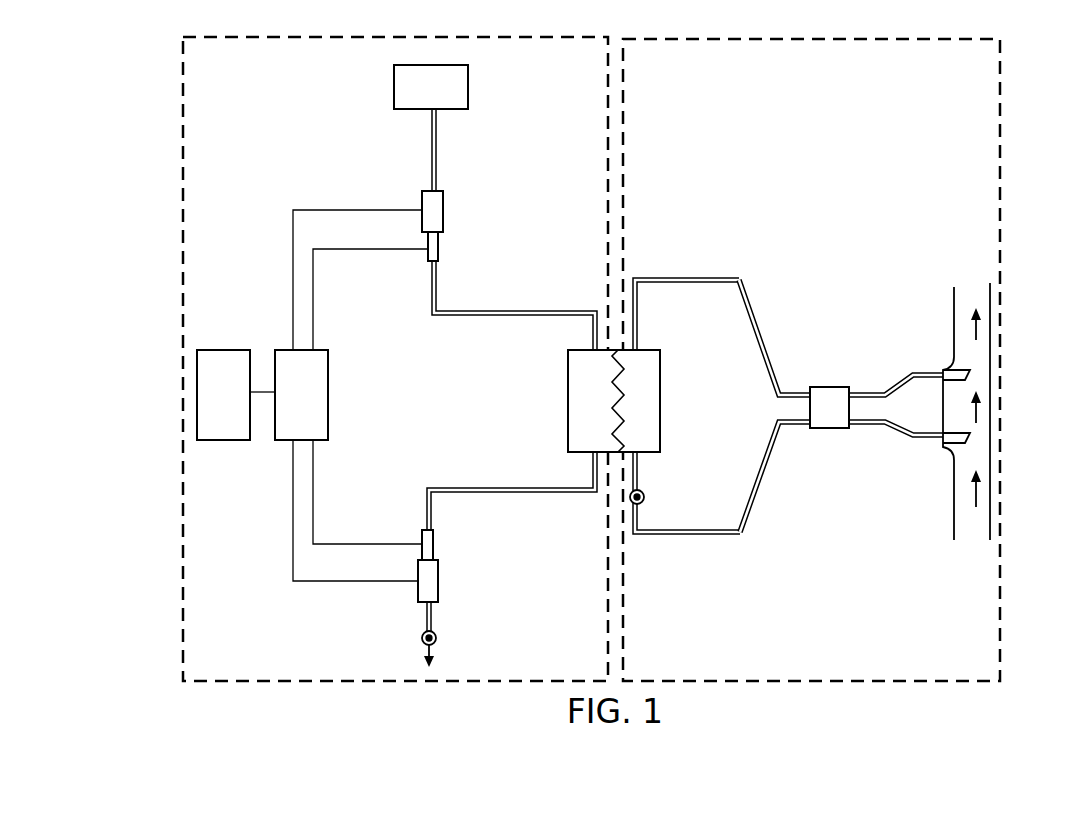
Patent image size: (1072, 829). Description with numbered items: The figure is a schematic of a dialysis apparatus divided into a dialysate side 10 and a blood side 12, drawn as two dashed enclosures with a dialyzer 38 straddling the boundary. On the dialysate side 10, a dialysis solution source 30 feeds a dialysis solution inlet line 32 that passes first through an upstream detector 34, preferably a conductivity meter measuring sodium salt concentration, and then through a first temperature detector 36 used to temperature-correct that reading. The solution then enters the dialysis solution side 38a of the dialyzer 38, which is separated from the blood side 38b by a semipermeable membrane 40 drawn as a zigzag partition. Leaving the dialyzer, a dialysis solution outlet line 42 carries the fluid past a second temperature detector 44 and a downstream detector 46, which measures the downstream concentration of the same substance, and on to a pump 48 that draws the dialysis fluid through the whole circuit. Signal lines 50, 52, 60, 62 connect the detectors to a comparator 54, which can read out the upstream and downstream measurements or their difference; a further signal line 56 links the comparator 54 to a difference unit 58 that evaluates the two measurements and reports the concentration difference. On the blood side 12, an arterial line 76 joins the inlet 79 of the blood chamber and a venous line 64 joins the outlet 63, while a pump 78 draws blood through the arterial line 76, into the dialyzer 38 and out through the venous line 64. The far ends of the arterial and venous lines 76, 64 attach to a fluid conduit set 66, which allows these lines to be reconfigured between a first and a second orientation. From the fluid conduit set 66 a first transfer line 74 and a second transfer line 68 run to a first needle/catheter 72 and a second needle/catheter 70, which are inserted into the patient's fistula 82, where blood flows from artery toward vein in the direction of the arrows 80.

The dialysate side 10 is at (180, 195).
The blood side 12 is at (1004, 126).
The dialysis solution source 30 is at (391, 88).
The dialysis solution inlet line 32 is at (438, 155).
The upstream detector 34 is at (444, 201).
The first temperature detector 36 is at (439, 243).
The dialyzer 38 is at (617, 401).
The dialysis solution side of dialyzer 38a is at (580, 368).
The blood side of dialyzer 38b is at (642, 410).
The semipermeable membrane 40 is at (613, 408).
The dialysis solution outlet line 42 is at (522, 492).
The second temperature detector 44 is at (434, 543).
The downstream detector 46 is at (439, 575).
The pump 48 is at (422, 638).
The signal line 50 is at (349, 210).
The signal line 52 is at (383, 250).
The comparator 54 is at (329, 393).
The signal line 56 is at (266, 390).
The difference unit 58 is at (233, 442).
The signal line 60 is at (347, 544).
The signal line 62 is at (375, 583).
The outlet of blood side of dialyzer 63 is at (638, 350).
The venous line 64 is at (695, 280).
The fluid conduit set 66 is at (827, 387).
The second transfer line 68 is at (897, 383).
The second needle/catheter 70 is at (963, 370).
The first needle/catheter 72 is at (960, 443).
The first transfer line 74 is at (903, 434).
The arterial line 76 is at (688, 534).
The pump 78 is at (645, 492).
The inlet of blood chamber of dialyzer 79 is at (638, 455).
The arrows 80 is at (973, 407).
The patient's fistula 82 is at (993, 307).